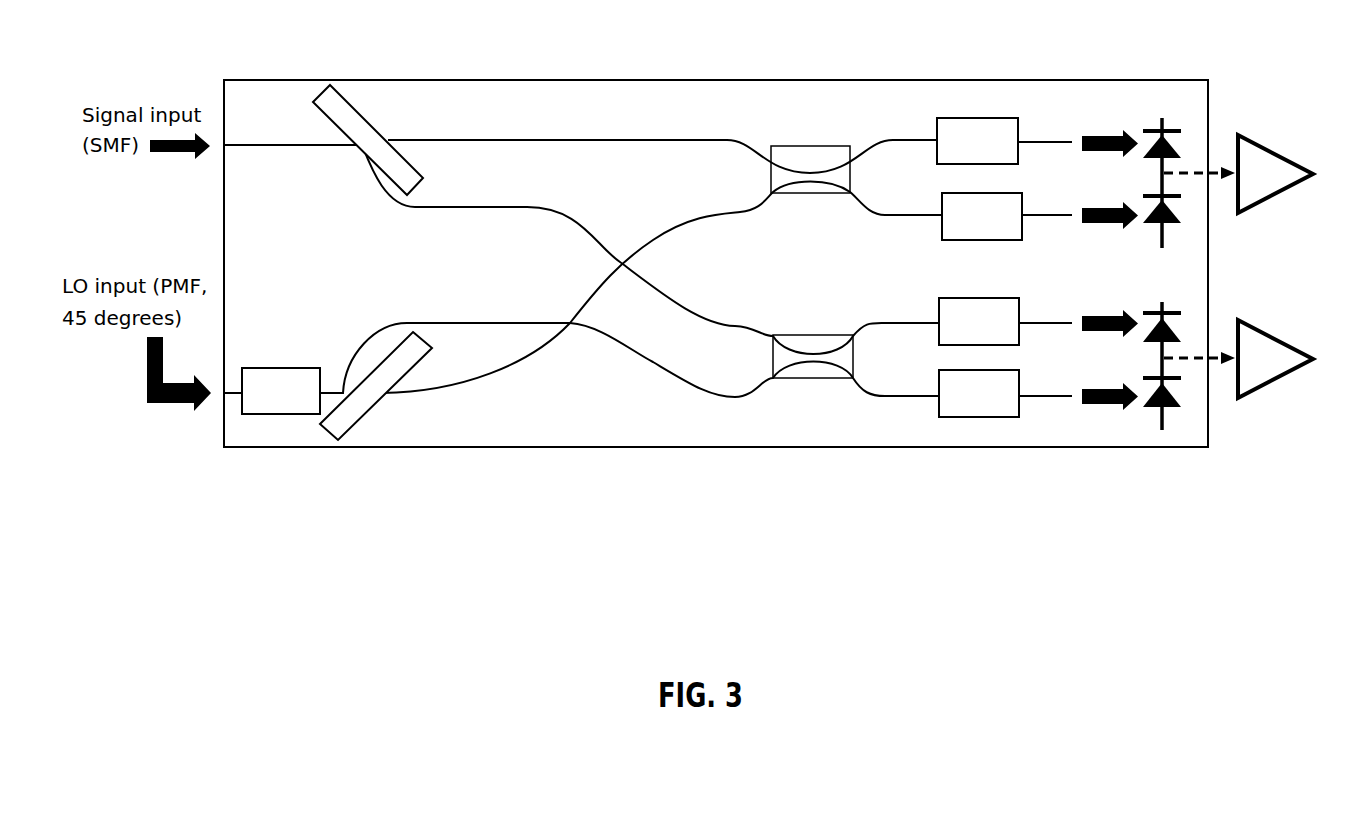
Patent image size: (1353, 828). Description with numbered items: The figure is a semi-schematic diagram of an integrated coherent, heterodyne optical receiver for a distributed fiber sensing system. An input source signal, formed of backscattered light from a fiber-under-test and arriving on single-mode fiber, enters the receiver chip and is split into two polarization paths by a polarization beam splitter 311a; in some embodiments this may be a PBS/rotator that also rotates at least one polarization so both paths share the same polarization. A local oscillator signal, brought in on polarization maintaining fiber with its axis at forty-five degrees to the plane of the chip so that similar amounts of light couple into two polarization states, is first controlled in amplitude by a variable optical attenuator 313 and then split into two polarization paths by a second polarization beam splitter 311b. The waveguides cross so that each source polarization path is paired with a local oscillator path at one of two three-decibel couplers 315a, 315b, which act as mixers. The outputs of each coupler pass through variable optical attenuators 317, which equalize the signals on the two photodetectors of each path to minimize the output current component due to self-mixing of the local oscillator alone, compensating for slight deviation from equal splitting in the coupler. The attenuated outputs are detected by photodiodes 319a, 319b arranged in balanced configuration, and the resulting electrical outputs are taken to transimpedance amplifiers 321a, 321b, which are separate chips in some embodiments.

The polarization beam splitter 311a is at (355, 108).
The polarization beam splitter 311b is at (360, 417).
The variable optical attenuator 313 is at (272, 368).
The 3 dB coupler 315a is at (809, 130).
The 3 dB coupler 315b is at (809, 390).
The variable optical attenuators 317 is at (981, 97).
The photodiodes 319a is at (1135, 112).
The photodiodes 319b is at (1113, 429).
The TIA 321a is at (1265, 148).
The TIA 321b is at (1267, 333).